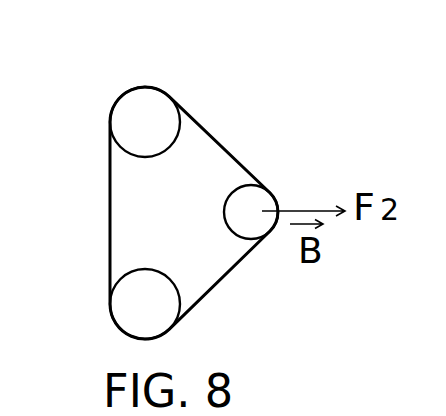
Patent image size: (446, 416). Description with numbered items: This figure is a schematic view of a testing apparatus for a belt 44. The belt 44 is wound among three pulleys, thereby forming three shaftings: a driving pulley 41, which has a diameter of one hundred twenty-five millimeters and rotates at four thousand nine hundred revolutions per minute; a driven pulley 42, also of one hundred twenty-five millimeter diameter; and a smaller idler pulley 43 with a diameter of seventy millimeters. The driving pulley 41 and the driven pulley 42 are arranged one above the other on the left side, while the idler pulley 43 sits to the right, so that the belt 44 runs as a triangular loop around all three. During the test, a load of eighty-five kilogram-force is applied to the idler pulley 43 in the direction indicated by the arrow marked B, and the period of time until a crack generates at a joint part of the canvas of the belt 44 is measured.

The driving pulley 41 is at (125, 298).
The driven pulley 42 is at (143, 105).
The idler pulley 43 is at (260, 198).
The belt 44 is at (218, 138).